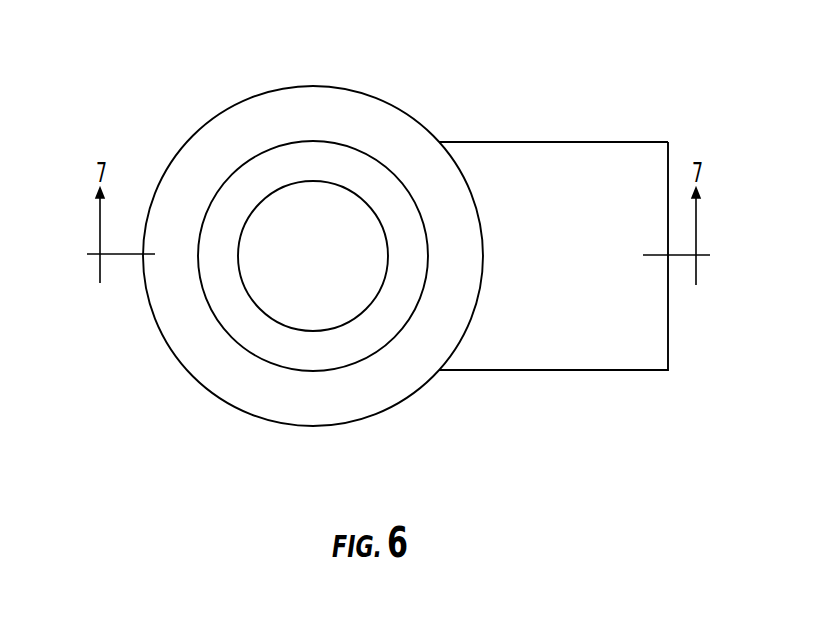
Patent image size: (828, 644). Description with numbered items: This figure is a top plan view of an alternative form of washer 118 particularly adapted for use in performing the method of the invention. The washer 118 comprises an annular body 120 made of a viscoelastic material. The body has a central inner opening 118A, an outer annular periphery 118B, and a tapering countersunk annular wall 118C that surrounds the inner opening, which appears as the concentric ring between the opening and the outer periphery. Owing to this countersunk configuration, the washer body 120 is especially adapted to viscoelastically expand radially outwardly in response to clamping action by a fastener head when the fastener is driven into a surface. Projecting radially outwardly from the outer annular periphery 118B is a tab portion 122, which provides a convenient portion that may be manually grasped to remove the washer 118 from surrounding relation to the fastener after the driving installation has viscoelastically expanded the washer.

The washer 118 is at (354, 253).
The inner opening 118A is at (343, 203).
The outer annular periphery 118B is at (551, 259).
The tapering countersunk annular wall 118C is at (257, 332).
The annular body 120 is at (222, 128).
The tab portion 122 is at (562, 152).